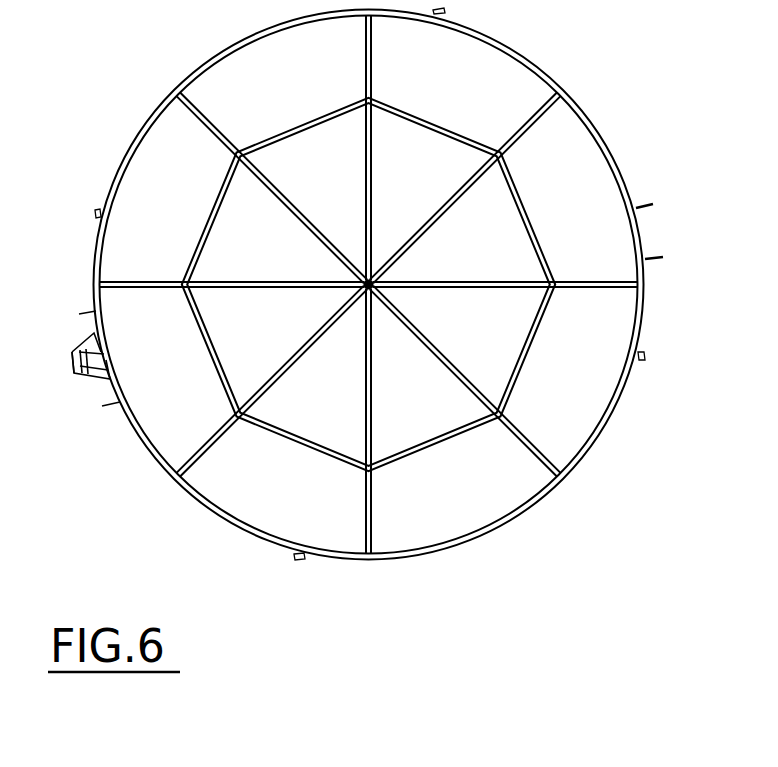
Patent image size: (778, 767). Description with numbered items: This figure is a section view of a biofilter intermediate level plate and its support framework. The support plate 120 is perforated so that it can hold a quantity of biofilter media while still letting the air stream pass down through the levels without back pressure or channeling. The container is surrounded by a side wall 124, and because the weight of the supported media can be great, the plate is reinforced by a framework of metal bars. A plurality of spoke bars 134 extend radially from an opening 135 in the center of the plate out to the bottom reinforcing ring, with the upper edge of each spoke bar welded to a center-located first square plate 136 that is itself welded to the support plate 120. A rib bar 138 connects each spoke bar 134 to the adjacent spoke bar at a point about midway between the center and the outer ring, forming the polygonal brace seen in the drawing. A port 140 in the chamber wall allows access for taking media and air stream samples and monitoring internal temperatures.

The support plate 120 is at (636, 166).
The side wall 124 is at (539, 69).
The spoke bars 134 is at (522, 136).
The opening 135 is at (378, 283).
The first square plate 136 is at (366, 281).
The rib bar 138 is at (534, 226).
The port 140 is at (73, 366).